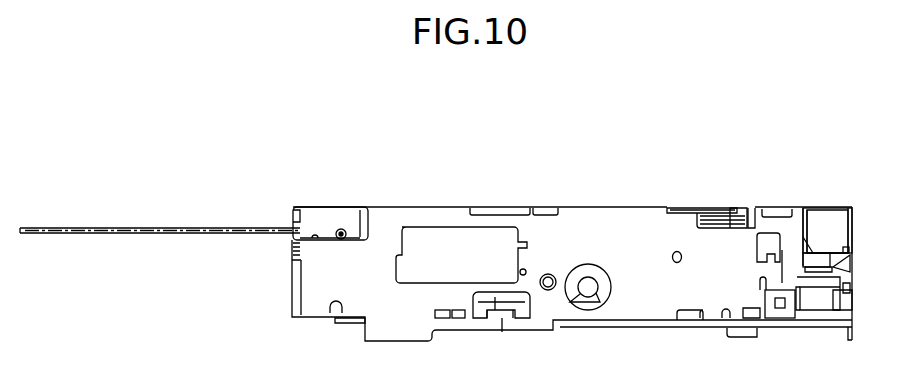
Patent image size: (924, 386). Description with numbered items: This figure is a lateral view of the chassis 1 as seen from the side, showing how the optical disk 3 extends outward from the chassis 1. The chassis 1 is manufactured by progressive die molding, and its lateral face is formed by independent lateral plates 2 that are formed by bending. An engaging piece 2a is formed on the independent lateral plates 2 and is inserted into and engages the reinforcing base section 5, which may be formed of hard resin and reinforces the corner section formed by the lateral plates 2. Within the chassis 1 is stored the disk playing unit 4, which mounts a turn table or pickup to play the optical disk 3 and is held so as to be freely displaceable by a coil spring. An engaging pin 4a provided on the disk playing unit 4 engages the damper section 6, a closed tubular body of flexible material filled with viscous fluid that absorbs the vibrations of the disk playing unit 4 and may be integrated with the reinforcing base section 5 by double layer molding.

The chassis 1 is at (610, 207).
The independent lateral plate 2 is at (797, 228).
The engaging piece 2a is at (765, 242).
The optical disk 3 is at (113, 228).
The disk playing unit 4 is at (823, 258).
The engaging pin 4a is at (850, 260).
The reinforcing base section 5 is at (780, 310).
The damper section 6 is at (818, 285).